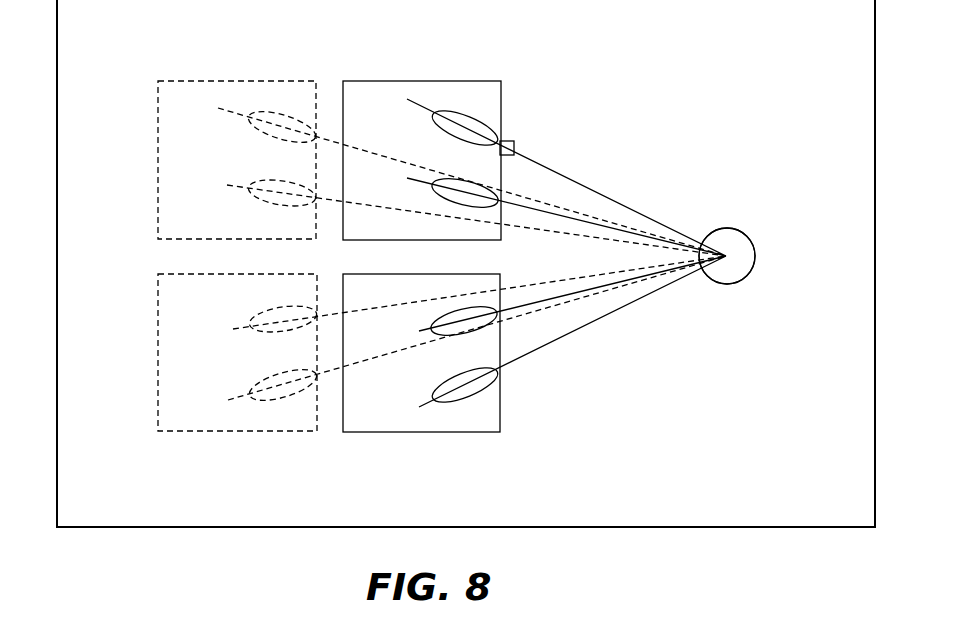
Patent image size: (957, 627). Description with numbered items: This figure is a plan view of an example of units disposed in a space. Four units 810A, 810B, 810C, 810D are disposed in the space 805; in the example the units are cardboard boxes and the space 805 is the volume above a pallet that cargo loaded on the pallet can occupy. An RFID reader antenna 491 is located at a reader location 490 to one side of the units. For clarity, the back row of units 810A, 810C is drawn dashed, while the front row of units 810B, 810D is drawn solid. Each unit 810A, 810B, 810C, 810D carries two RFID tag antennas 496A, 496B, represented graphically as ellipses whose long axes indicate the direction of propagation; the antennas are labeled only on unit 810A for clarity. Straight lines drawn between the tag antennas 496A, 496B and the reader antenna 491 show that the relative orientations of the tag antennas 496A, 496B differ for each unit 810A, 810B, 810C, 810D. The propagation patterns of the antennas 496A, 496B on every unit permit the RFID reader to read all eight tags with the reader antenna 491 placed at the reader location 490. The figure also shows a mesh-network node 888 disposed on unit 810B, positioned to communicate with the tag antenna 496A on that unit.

The space 805 is at (735, 527).
The reader location 490 is at (729, 318).
The RFID reader antenna 491 is at (748, 232).
The unit 810A is at (237, 79).
The unit 810B is at (422, 80).
The unit 810C is at (236, 437).
The unit 810D is at (422, 433).
The RFID tag antenna 496A is at (258, 136).
The RFID tag antenna 496B is at (258, 200).
The mesh-network node 888 is at (512, 142).